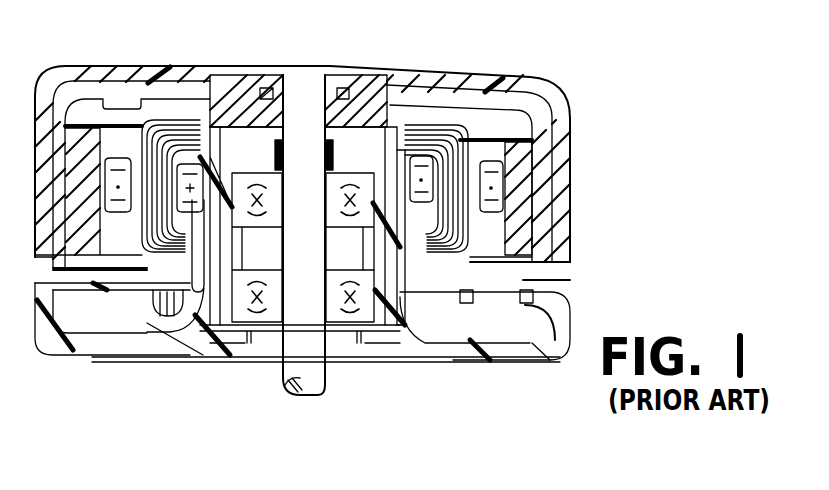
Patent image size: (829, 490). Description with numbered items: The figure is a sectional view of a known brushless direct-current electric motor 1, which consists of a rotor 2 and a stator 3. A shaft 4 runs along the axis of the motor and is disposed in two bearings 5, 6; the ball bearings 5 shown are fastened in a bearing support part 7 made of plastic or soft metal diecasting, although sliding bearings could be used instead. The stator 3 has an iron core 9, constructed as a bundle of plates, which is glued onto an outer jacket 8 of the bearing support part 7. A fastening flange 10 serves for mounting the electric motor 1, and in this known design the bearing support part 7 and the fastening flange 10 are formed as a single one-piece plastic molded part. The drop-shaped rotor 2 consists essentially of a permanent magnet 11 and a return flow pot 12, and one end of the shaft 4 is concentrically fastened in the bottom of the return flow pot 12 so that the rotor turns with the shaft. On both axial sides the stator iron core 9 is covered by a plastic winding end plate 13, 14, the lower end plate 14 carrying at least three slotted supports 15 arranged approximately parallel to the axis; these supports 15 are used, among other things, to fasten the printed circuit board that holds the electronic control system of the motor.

The electric motor 1 is at (346, 45).
The rotor 2 is at (570, 108).
The stator 3 is at (143, 130).
The shaft 4 is at (298, 127).
The ball bearing 5 is at (356, 182).
The bearing 6 is at (352, 318).
The bearing support part 7 is at (229, 95).
The outer jacket 8 is at (428, 203).
The iron core 9 is at (190, 170).
The fastening flange 10 is at (157, 338).
The permanent magnet 11 is at (520, 217).
The return flow pot 12 is at (542, 184).
The winding end plate 13 is at (417, 157).
The lower end plate 14 is at (425, 335).
The slotted support 15 is at (155, 300).